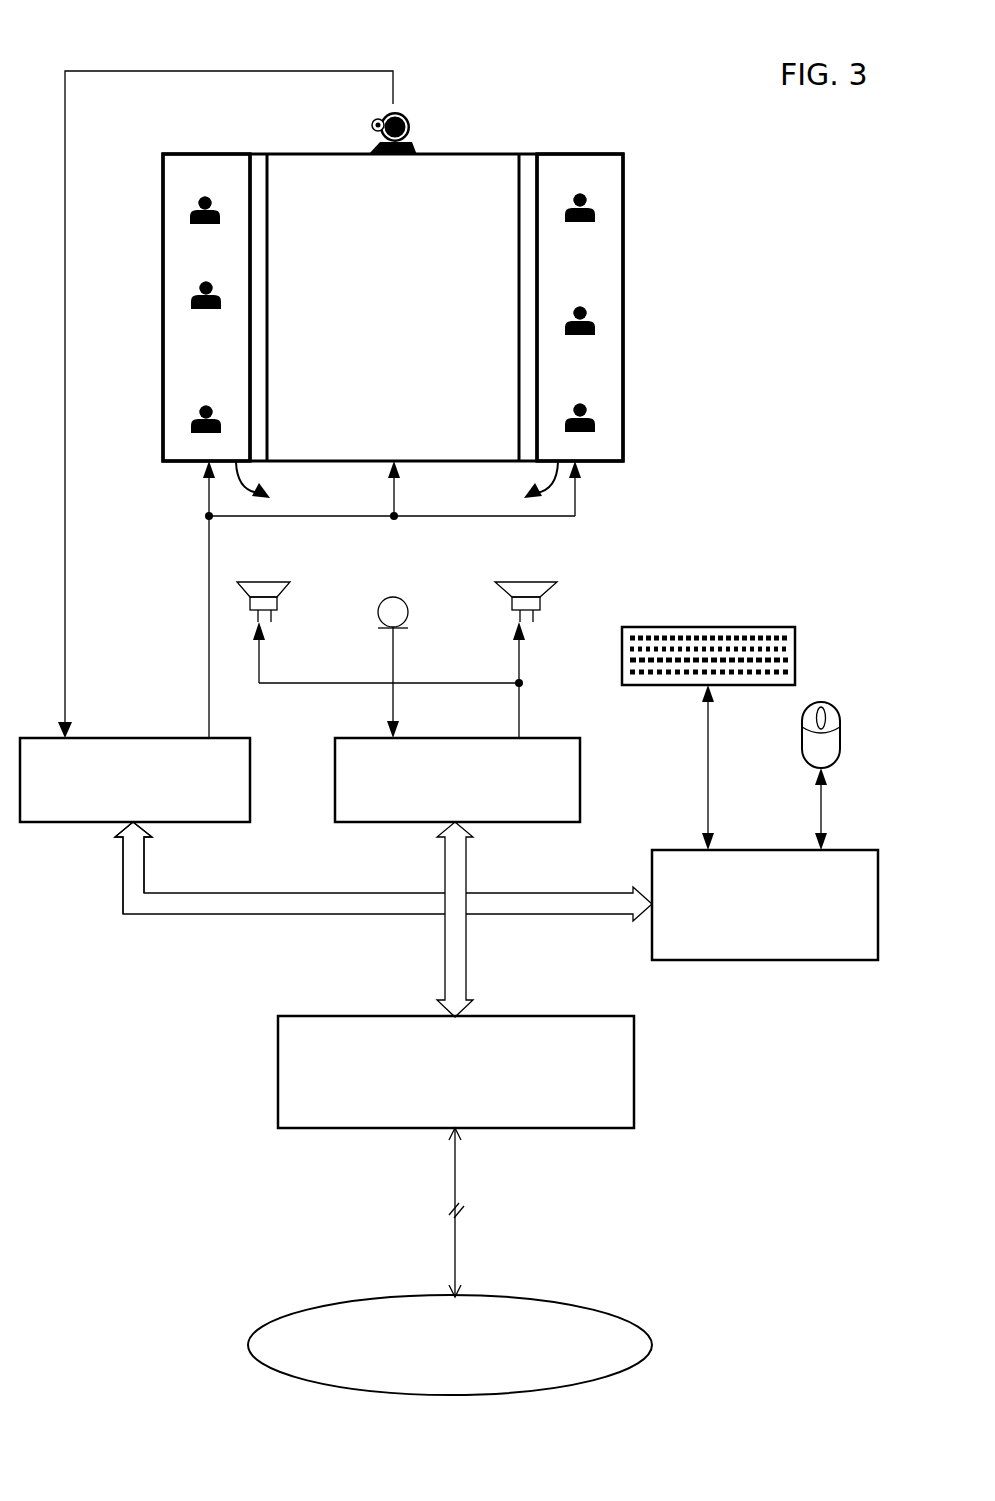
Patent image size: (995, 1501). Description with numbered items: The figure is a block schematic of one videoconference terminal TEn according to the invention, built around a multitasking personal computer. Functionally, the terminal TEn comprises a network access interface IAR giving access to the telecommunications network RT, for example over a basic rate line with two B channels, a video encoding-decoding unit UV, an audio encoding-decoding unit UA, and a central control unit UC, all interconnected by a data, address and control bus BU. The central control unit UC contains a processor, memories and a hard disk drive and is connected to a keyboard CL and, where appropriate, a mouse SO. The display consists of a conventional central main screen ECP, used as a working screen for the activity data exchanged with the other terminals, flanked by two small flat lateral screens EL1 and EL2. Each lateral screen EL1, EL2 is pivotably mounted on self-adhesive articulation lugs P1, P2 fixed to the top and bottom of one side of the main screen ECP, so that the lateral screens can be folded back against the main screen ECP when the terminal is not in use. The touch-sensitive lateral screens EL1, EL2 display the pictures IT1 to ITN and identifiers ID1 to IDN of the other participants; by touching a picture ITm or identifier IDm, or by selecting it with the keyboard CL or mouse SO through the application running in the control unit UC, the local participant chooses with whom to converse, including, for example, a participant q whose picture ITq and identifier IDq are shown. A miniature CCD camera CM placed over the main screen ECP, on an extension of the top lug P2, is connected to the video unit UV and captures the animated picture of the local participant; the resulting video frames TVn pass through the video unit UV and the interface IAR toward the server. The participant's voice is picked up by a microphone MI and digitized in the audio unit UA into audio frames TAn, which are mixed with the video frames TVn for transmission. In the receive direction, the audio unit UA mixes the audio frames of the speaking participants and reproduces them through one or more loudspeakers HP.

The central main screen ECP is at (478, 154).
The articulation lug P1 is at (258, 154).
The articulation lug P2 is at (530, 154).
The lateral screen EL1 is at (163, 350).
The lateral screen EL2 is at (623, 268).
The digital video camera CM is at (487, 73).
The identifier ID1 is at (205, 193).
The picture IT1 is at (193, 213).
The identifier IDm is at (206, 283).
The picture ITm is at (193, 297).
The identifier of participant q IDq is at (580, 307).
The image of participant q ITq is at (593, 323).
The identifier IDN is at (580, 403).
The picture ITN is at (593, 422).
The videoconference terminal TEn is at (843, 355).
The loudspeaker HP is at (278, 603).
The microphone MI is at (408, 610).
The video encoding-decoding unit UV is at (153, 738).
The audio encoding-decoding unit UA is at (580, 760).
The data, address and control bus BU is at (280, 914).
The video frames TVn is at (123, 880).
The audio frames TAn is at (466, 878).
The keyboard CL is at (703, 627).
The mouse SO is at (823, 701).
The central control unit UC is at (850, 850).
The network access interface IAR is at (634, 1050).
The telecommunications network RT is at (300, 1312).